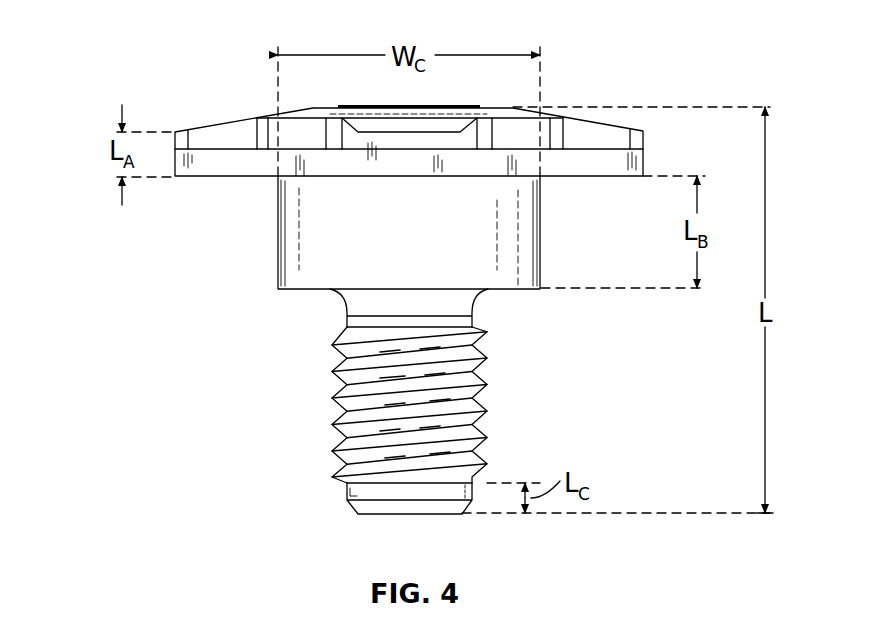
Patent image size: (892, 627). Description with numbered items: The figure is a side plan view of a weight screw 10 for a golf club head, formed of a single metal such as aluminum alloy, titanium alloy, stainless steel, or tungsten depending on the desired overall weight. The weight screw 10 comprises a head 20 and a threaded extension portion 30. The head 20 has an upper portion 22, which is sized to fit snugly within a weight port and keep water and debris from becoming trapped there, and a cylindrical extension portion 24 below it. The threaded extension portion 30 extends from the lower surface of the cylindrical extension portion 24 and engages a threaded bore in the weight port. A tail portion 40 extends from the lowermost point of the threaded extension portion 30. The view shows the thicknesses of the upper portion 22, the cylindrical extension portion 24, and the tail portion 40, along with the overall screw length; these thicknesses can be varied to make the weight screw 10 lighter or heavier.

The weight screw 10 is at (150, 76).
The head 20 is at (210, 202).
The upper portion 22 is at (644, 142).
The cylindrical extension portion 24 is at (543, 238).
The threaded extension portion 30 is at (330, 412).
The tail portion 40 is at (346, 497).